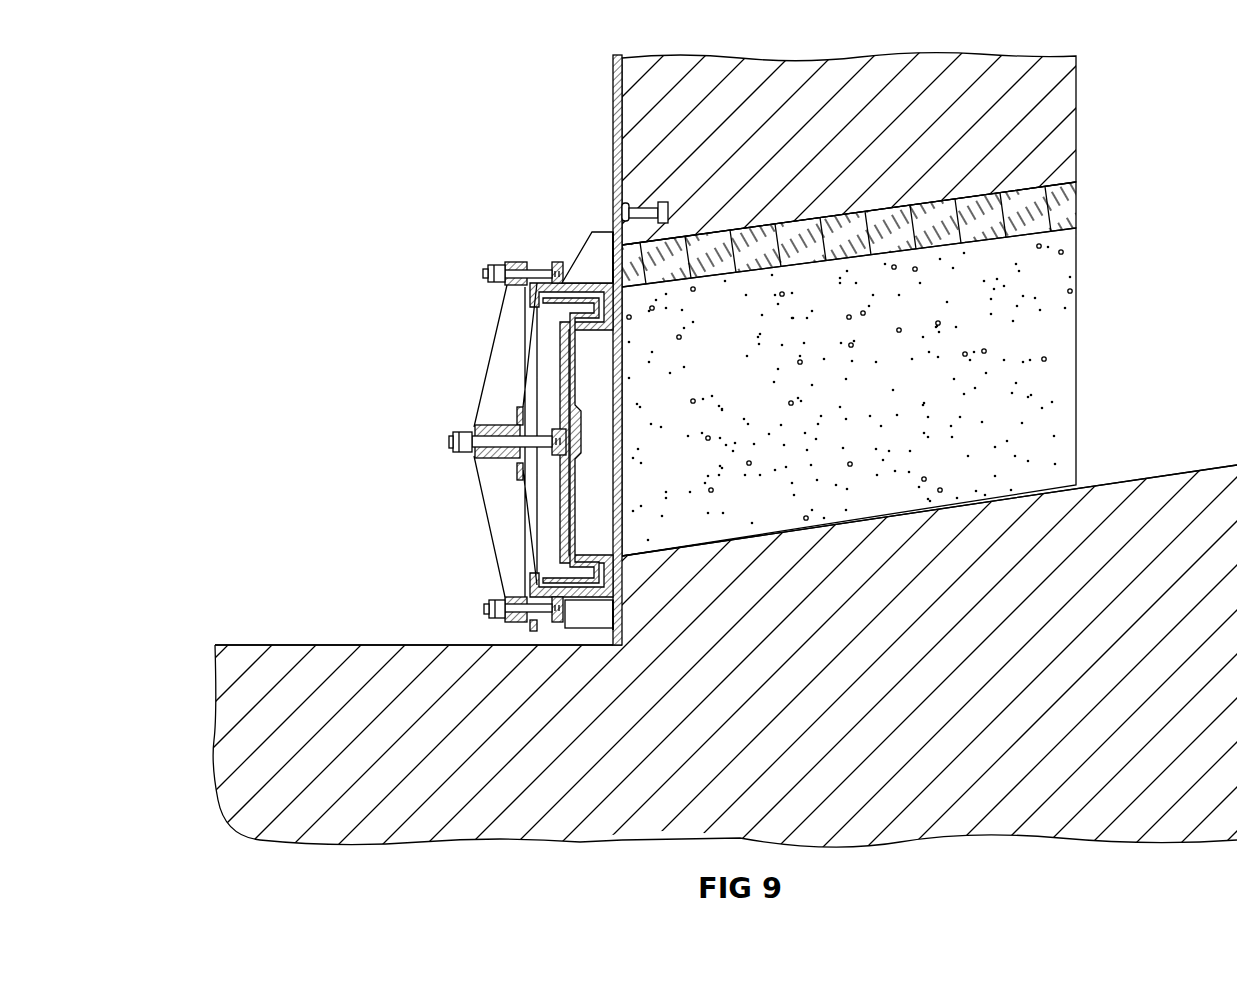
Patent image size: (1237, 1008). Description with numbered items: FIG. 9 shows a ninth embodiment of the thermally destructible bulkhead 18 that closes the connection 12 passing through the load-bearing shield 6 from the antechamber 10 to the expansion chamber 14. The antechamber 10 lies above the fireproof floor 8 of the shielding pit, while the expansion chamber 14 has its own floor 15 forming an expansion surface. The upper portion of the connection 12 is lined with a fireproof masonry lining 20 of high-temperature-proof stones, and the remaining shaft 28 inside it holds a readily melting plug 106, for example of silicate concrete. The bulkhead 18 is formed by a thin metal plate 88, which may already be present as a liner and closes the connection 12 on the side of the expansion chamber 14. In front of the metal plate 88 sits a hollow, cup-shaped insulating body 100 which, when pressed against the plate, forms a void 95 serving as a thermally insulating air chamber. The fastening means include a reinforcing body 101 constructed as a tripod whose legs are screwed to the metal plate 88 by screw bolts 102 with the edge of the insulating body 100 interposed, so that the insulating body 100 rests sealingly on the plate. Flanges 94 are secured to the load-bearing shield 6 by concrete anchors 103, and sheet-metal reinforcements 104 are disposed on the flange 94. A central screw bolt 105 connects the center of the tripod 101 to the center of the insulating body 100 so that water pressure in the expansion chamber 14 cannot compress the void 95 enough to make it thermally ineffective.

The load-bearing shield 6 is at (1058, 116).
The floor 8 is at (1208, 515).
The antechamber 10 is at (1185, 378).
The connection 12 is at (735, 241).
The expansion chamber 14 is at (346, 455).
The floor of the expansion chamber 15 is at (285, 643).
The bulkhead 18 is at (496, 238).
The masonry lining 20 is at (1033, 218).
The shaft 28 is at (836, 333).
The metal plate 88 is at (613, 128).
The flange 94 is at (613, 240).
The void 95 is at (592, 392).
The insulating body 100 is at (560, 352).
The reinforcing body 101 is at (505, 524).
The screw bolts 102 is at (510, 262).
The concrete anchors 103 is at (645, 205).
The sheet-metal reinforcements 104 is at (588, 258).
The screw bolt 105 is at (505, 458).
The plug 106 is at (1058, 283).